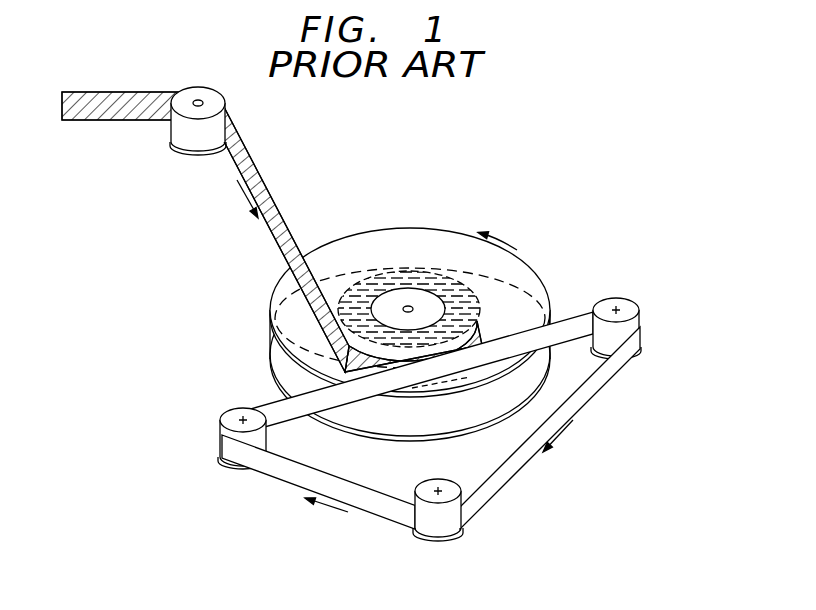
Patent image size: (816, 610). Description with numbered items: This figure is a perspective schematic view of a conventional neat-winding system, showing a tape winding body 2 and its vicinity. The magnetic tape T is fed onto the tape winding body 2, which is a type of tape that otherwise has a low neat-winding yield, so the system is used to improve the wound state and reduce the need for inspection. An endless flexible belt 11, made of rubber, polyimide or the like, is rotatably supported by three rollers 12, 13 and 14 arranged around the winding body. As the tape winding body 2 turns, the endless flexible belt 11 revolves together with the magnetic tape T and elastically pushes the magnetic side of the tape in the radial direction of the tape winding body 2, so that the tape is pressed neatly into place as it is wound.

The tape winding body 2 is at (425, 243).
The endless flexible belt 11 is at (268, 401).
The roller 12 is at (234, 412).
The roller 13 is at (624, 308).
The roller 14 is at (462, 490).
The magnetic tape T is at (270, 204).